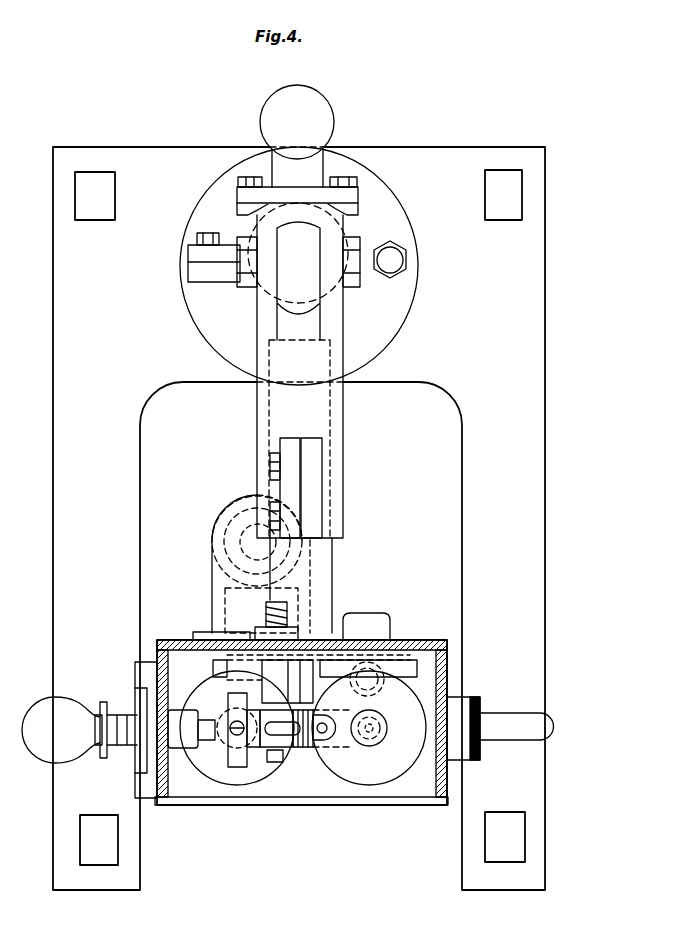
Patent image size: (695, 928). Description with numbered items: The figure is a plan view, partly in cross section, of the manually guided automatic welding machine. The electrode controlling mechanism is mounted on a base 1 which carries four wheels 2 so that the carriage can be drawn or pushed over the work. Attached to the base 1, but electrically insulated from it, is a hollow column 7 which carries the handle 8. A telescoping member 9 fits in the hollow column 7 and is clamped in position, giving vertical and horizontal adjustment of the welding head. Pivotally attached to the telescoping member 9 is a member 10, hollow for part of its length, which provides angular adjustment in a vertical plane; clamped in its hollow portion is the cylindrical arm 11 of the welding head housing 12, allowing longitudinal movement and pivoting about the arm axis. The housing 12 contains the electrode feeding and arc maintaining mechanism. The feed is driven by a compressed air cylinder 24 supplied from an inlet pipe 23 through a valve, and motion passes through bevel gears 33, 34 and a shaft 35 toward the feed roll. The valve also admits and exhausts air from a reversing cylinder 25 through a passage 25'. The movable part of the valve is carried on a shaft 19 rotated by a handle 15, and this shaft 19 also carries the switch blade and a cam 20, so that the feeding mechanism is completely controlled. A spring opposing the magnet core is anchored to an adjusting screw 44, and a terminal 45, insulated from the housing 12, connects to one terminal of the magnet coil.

The base 1 is at (63, 413).
The wheels 2 is at (85, 200).
The column 7 is at (353, 293).
The handle 8 is at (318, 116).
The telescoping member 9 is at (300, 252).
The member 10 is at (320, 365).
The cylindrical arm 11 is at (323, 571).
The welding head housing 12 is at (415, 640).
The handle 15 is at (42, 733).
The shaft 19 is at (205, 738).
The cam 20 is at (238, 760).
The inlet pipe 23 is at (287, 609).
The cylinder 24 is at (220, 775).
The reversing cylinder 25 is at (372, 726).
The passage 25' is at (251, 728).
The bevel gear 33 is at (252, 565).
The bevel gear 34 is at (240, 553).
The shaft 35 is at (225, 521).
The adjusting screw 44 is at (378, 737).
The terminal 45 is at (530, 722).